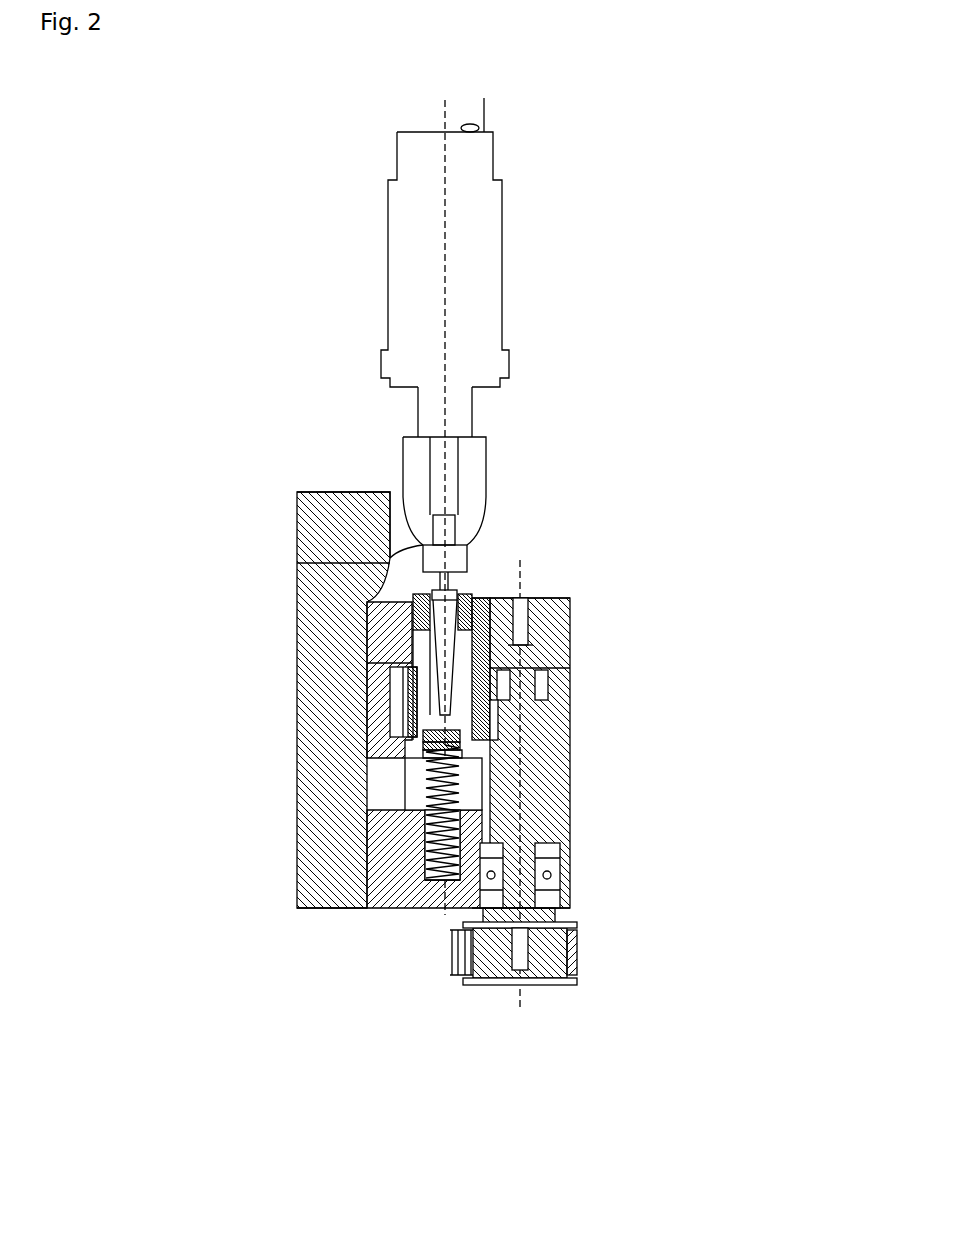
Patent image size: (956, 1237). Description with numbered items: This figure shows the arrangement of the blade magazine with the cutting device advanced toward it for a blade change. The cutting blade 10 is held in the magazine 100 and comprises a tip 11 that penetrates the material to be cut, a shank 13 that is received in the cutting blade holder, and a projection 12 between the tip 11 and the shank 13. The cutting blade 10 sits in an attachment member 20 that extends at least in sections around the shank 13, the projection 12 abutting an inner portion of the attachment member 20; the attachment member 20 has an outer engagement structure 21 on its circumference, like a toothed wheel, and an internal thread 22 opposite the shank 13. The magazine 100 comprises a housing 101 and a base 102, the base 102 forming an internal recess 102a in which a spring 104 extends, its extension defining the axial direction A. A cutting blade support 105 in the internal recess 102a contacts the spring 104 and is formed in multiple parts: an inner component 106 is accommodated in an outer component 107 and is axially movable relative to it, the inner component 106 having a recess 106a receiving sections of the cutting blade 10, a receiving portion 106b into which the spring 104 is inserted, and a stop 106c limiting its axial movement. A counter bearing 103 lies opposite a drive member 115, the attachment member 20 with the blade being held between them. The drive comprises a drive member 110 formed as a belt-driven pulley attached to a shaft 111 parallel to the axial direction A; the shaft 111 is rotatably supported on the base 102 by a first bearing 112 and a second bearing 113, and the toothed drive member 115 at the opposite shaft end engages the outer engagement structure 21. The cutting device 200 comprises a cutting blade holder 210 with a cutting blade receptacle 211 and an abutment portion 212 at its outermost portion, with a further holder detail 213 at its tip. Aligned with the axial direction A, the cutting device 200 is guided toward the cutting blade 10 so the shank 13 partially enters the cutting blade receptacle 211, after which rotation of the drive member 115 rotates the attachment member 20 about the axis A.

The cutting device 200 is at (502, 306).
The cutting blade holder 210 is at (473, 470).
The cutting blade receptacle 211 is at (463, 540).
The abutment portion 212 is at (413, 583).
The sonotrode tip 213 is at (430, 585).
The internal thread 22 is at (415, 598).
The outer engagement structure 21 is at (407, 603).
The attachment member 20 is at (473, 592).
The cutting blade 10 is at (443, 590).
The shank 13 is at (480, 593).
The projection 12 is at (570, 605).
The tip 11 is at (470, 745).
The counter bearing 103 is at (347, 625).
The housing 101 is at (327, 890).
The base 102 is at (407, 898).
The internal recess 102a is at (472, 795).
The outer component 107 is at (413, 700).
The inner component 106 is at (417, 712).
The recess 106a is at (417, 730).
The stop 106c is at (423, 742).
The receiving portion 106b is at (423, 750).
The spring 104 is at (465, 775).
The cutting blade support 105 is at (497, 712).
The drive member 115 is at (562, 618).
The second bearing 113 is at (540, 680).
The shaft 111 is at (535, 833).
The first bearing 112 is at (560, 893).
The drive member 110 is at (577, 980).
The magazine 100 is at (315, 957).
The axial direction A is at (443, 888).